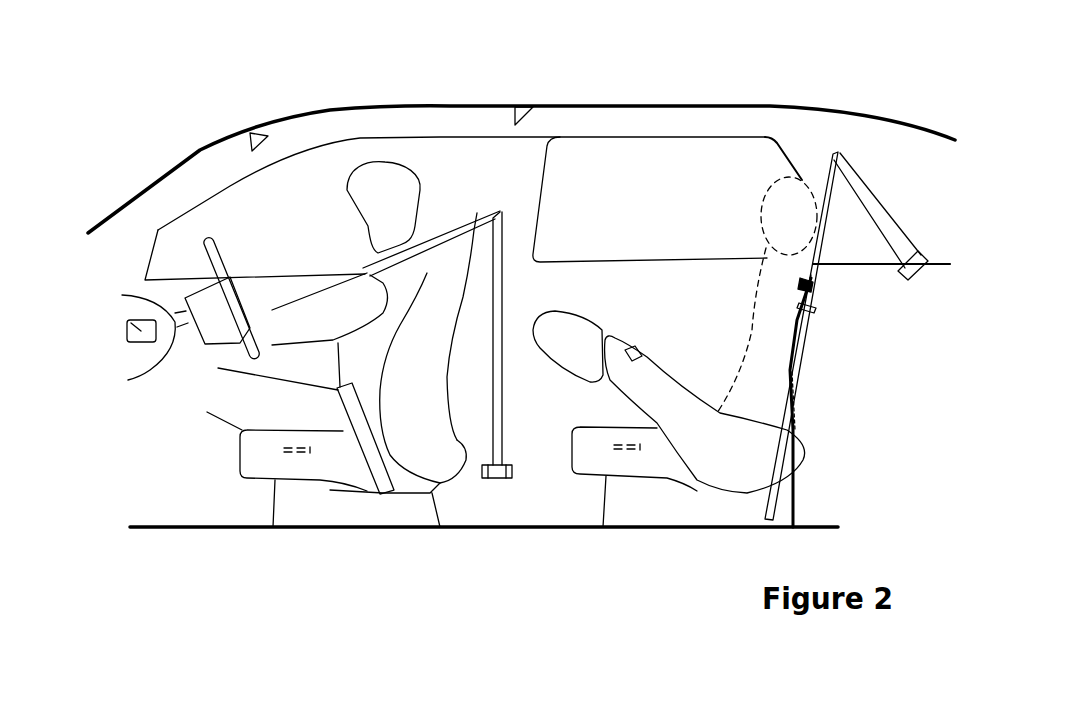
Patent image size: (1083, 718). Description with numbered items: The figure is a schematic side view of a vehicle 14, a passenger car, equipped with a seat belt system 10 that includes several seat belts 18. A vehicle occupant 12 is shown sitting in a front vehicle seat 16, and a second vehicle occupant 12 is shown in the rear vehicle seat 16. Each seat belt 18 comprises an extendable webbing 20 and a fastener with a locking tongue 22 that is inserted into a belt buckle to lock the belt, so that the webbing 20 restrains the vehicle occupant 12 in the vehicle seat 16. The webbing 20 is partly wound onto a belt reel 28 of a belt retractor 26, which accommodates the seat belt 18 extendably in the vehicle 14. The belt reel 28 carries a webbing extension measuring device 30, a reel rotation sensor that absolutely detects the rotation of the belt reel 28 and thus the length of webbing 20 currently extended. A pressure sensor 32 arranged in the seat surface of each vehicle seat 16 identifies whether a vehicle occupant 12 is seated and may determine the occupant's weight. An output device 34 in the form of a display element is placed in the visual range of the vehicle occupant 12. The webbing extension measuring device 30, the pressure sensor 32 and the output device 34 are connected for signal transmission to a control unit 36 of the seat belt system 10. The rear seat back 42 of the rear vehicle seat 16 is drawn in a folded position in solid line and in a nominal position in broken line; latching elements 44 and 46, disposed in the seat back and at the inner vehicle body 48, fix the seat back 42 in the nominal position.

The seat belt system 10 is at (783, 87).
The vehicle occupant 12 is at (353, 172).
The vehicle 14 is at (195, 150).
The vehicle seat 16 is at (258, 485).
The seat belt 18 is at (465, 212).
The webbing 20 is at (353, 418).
The locking tongue 22 is at (823, 305).
The belt retractor 26 is at (488, 482).
The belt reel 28 is at (500, 480).
The webbing extension measuring device 30 is at (512, 480).
The pressure sensor 32 is at (297, 453).
The output device 34 is at (256, 130).
The control unit 36 is at (125, 326).
The rear seat back 42 is at (613, 352).
The latching element 44 is at (640, 343).
The latching element 46 is at (805, 290).
The inner vehicle body 48 is at (860, 266).